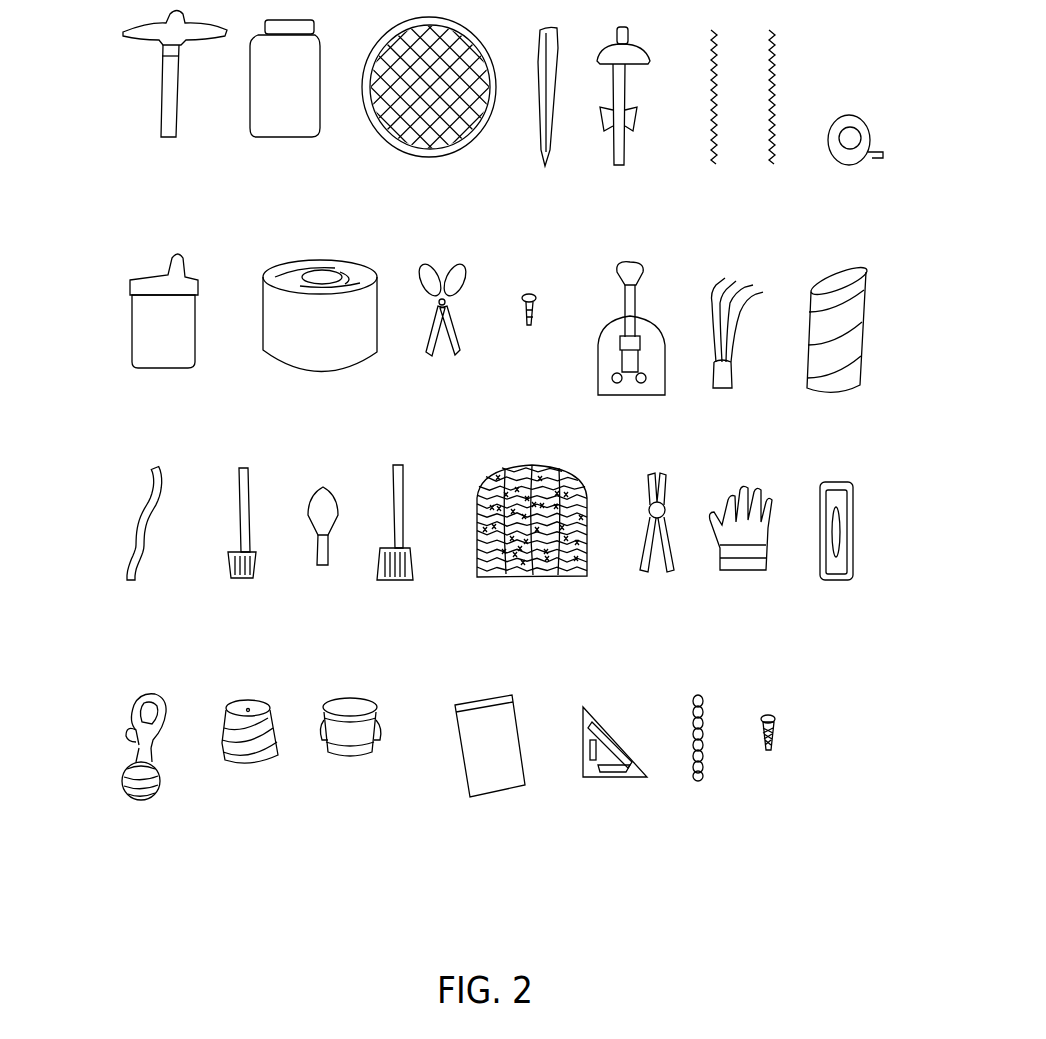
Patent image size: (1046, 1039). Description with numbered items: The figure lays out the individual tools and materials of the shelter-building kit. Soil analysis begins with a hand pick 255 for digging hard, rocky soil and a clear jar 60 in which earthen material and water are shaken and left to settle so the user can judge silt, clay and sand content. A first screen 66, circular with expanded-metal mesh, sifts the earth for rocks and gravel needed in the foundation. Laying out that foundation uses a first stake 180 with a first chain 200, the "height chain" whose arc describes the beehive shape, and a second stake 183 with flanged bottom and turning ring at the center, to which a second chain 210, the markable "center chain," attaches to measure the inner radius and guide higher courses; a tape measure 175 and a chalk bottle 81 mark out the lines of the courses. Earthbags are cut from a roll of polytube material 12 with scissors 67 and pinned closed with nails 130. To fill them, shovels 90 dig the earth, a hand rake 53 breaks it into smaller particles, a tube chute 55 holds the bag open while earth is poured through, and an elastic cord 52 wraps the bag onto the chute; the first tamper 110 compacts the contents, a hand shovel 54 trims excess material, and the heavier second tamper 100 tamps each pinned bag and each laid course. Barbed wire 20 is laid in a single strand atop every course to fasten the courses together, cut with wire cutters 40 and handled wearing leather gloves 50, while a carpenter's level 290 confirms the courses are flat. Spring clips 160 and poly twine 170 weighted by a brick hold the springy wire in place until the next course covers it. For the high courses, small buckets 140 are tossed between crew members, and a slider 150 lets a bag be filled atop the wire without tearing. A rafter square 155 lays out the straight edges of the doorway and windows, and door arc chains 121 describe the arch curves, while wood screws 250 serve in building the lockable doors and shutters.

The hand pick 255 is at (163, 115).
The clear jar 60 is at (287, 125).
The first screen 66 is at (423, 150).
The first stake 180 is at (537, 130).
The second stake 183 is at (610, 150).
The first chain 200 is at (700, 138).
The second chain 210 is at (760, 143).
The tape measure 175 is at (828, 157).
The chalk bottle 81 is at (165, 358).
The polytube material 12 is at (283, 355).
The scissors 67 is at (428, 340).
The nails 130 is at (517, 328).
The shovels 90 is at (600, 368).
The hand rake 53 is at (717, 367).
The tube chute 55 is at (808, 368).
The elastic cord 52 is at (141, 566).
The first tamper 110 is at (235, 543).
The hand shovel 54 is at (315, 555).
The second tamper 100 is at (413, 562).
The barbed wire 20 is at (493, 573).
The wire cutters 40 is at (642, 547).
The leather gloves 50 is at (717, 543).
The carpenter's level 290 is at (850, 558).
The spring clips 160 is at (124, 795).
The poly twine 170 is at (220, 742).
The small buckets 140 is at (345, 748).
The slider 150 is at (470, 767).
The rafter square 155 is at (582, 767).
The door arc chains 121 is at (688, 770).
The wood screws 250 is at (777, 732).